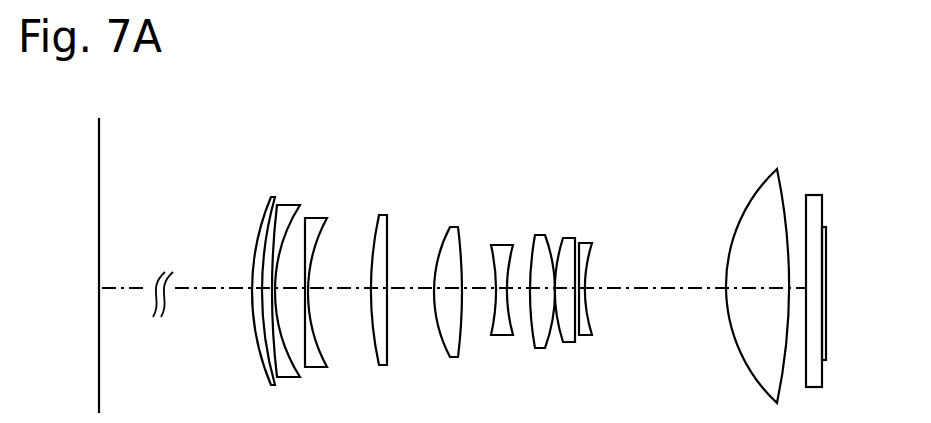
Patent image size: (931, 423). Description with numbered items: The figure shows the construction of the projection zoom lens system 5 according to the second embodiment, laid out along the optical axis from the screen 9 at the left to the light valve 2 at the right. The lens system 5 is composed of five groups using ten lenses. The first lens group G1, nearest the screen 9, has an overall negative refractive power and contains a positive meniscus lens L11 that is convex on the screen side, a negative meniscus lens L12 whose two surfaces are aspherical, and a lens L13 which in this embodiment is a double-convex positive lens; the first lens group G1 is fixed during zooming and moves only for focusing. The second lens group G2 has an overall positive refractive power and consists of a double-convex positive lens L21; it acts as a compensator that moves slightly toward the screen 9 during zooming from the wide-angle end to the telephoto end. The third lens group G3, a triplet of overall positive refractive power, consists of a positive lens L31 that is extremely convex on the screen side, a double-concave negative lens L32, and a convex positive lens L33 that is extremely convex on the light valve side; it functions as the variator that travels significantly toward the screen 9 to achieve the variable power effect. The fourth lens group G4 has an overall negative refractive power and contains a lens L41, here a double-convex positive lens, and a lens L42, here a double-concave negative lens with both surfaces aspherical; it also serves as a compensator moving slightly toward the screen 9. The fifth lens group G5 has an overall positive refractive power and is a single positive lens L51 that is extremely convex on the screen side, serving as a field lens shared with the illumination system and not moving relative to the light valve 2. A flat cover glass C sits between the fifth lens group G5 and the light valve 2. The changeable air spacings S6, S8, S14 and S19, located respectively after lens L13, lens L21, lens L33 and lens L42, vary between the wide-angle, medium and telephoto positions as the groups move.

The projection zoom lens system 5 is at (828, 82).
The screen 9 is at (98, 198).
The first lens group G1 is at (370, 136).
The second lens group G2 is at (430, 136).
The third lens group G3 is at (588, 136).
The fourth lens group G4 is at (751, 136).
The fifth lens group G5 is at (835, 136).
The positive meniscus lens L11 is at (258, 225).
The negative meniscus lens L12 is at (291, 203).
The double-convex positive lens L13 is at (308, 218).
The double-convex positive lens L21 is at (386, 215).
The positive lens L31 is at (458, 227).
The double-concave negative lens L32 is at (512, 243).
The convex positive lens L33 is at (538, 235).
The double-convex positive lens L41 is at (584, 238).
The double-concave negative lens L42 is at (592, 247).
The positive lens L51 is at (757, 190).
The distance between lens surfaces (sixth surface spacing) S6 is at (338, 290).
The distance between lens surfaces (eighth surface spacing) S8 is at (410, 289).
The distance between lens surfaces (fourteenth surface spacing) S14 is at (554, 290).
The distance between lens surfaces (nineteenth surface spacing) S19 is at (648, 288).
The cover glass C is at (822, 210).
The light valve (DMD) 2 is at (827, 253).